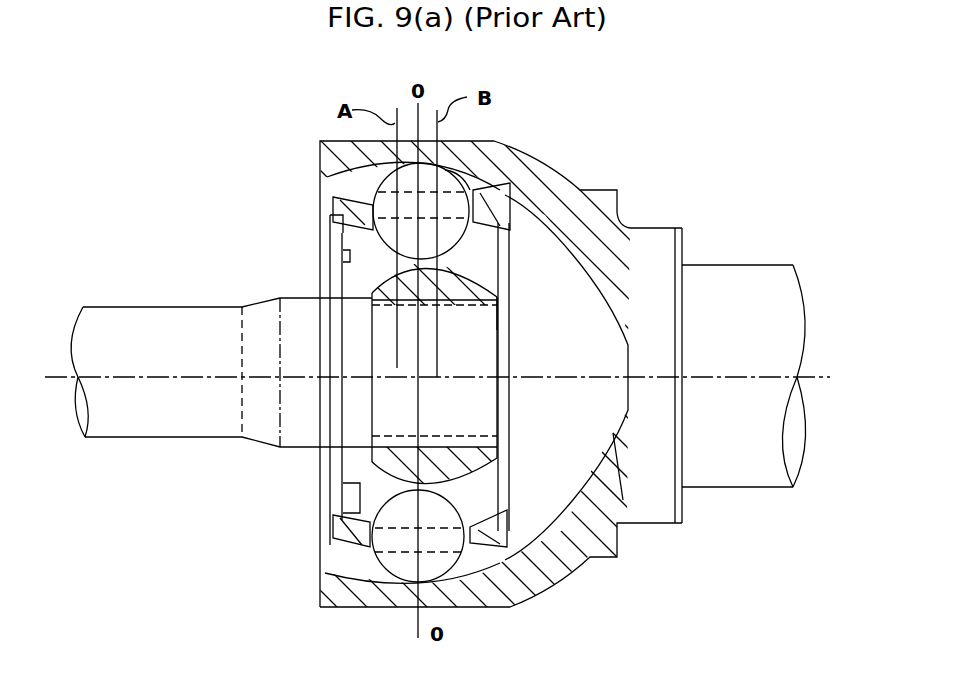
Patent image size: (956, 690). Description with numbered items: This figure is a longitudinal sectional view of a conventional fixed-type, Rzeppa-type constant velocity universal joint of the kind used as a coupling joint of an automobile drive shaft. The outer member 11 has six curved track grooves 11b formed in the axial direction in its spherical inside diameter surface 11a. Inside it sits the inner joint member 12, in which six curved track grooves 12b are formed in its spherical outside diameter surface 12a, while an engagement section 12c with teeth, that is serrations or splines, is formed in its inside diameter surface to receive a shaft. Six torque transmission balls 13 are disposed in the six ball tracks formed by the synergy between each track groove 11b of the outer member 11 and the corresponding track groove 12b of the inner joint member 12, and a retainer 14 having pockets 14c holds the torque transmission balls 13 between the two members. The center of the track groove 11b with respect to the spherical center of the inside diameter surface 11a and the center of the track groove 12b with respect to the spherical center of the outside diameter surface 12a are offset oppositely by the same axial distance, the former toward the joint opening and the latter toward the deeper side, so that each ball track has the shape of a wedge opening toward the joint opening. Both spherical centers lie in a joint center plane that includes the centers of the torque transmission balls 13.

The outer member 11 is at (319, 141).
The spherical inside diameter surface 11a is at (497, 597).
The track grooves 11b is at (483, 180).
The inner joint member 12 is at (349, 250).
The spherical outside diameter surface 12a is at (623, 527).
The track grooves 12b is at (465, 263).
The engagement section 12c is at (482, 312).
The torque transmission balls 13 is at (369, 187).
The retainer 14 is at (503, 202).
The pockets 14c is at (447, 172).